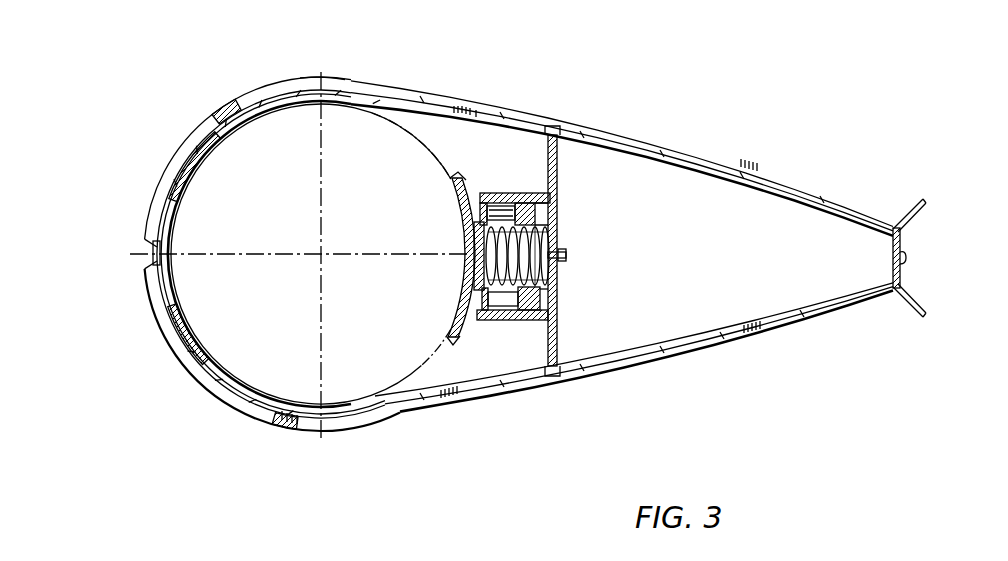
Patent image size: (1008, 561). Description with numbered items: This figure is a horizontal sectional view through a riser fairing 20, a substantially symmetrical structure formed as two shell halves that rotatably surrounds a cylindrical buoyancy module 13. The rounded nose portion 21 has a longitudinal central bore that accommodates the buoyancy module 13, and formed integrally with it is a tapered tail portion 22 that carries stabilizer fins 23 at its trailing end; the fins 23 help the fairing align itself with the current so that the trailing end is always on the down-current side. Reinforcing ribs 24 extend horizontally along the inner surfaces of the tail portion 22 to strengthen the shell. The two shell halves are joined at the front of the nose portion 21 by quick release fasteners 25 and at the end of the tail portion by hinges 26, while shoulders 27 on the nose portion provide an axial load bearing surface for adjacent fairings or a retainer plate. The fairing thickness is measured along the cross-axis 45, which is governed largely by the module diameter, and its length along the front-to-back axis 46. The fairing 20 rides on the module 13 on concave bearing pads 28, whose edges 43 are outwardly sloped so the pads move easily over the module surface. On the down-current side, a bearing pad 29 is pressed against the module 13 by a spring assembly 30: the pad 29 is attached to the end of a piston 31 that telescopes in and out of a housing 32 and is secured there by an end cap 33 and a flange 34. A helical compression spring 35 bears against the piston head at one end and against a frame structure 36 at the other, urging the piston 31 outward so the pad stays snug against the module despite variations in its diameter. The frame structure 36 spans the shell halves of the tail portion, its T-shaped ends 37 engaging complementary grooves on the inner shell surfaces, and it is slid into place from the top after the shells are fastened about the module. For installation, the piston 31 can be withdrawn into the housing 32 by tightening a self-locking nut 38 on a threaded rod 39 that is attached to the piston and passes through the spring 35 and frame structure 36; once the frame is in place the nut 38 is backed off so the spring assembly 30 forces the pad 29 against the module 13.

The buoyancy module 13 is at (407, 380).
The fairing 20 is at (124, 155).
The nose portion 21 is at (311, 74).
The tail portion 22 is at (660, 150).
The stabilizer fins 23 is at (907, 207).
The reinforcing ribs 24 is at (742, 172).
The quick release fasteners 25 is at (151, 255).
The hinges 26 is at (892, 262).
The shoulders 27 is at (255, 98).
The bearing pads 28 is at (203, 162).
The bearing pad 29 is at (466, 262).
The spring assembly 30 is at (513, 190).
The piston 31 is at (462, 290).
The housing 32 is at (510, 322).
The end cap 33 is at (481, 204).
The flange 34 is at (571, 241).
The helical compression spring 35 is at (546, 286).
The frame structure 36 is at (560, 172).
The ends of the frame structure 37 is at (561, 126).
The nut 38 is at (566, 251).
The threaded rod 39 is at (568, 258).
The edges of the pads 43 is at (213, 122).
The cross-axis 45 is at (324, 186).
The front-to-back axis 46 is at (360, 253).